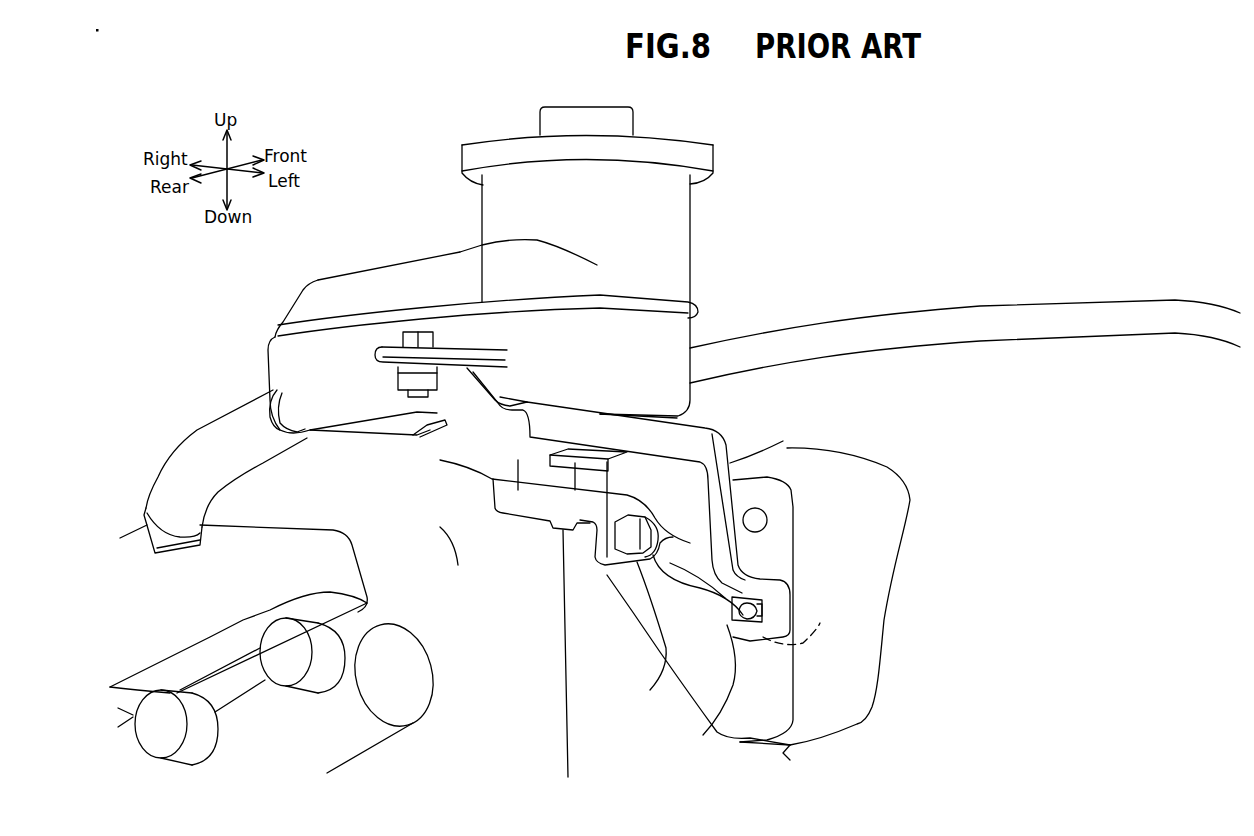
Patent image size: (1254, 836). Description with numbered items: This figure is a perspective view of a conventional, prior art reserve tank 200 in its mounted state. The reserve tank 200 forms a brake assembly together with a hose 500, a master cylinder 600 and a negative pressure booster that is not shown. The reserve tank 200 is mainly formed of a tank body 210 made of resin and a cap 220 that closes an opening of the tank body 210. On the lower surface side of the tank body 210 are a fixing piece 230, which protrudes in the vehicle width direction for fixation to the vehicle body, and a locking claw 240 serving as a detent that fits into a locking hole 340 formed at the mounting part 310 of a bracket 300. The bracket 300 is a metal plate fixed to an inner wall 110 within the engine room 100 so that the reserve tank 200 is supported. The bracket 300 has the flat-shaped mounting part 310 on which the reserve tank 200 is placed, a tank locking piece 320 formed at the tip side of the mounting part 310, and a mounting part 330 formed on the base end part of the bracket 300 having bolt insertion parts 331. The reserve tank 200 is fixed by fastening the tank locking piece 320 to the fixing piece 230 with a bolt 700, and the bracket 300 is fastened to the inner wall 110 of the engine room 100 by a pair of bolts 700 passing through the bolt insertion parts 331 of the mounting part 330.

The engine room 100 is at (510, 709).
The inner wall 110 is at (992, 380).
The reserve tank 200 is at (538, 252).
The tank body 210 is at (673, 248).
The cap 220 is at (702, 158).
The fixing piece 230 is at (400, 348).
The locking claw 240 is at (575, 468).
The bracket 300 is at (720, 423).
The mounting part 310 is at (517, 478).
The tank locking piece 320 is at (388, 370).
The mounting part 330 is at (733, 617).
The bolt insertion part 331 is at (700, 593).
The locking hole 340 is at (563, 521).
The hose 500 is at (213, 437).
The master cylinder 600 is at (397, 673).
The bolt 700 is at (428, 332).